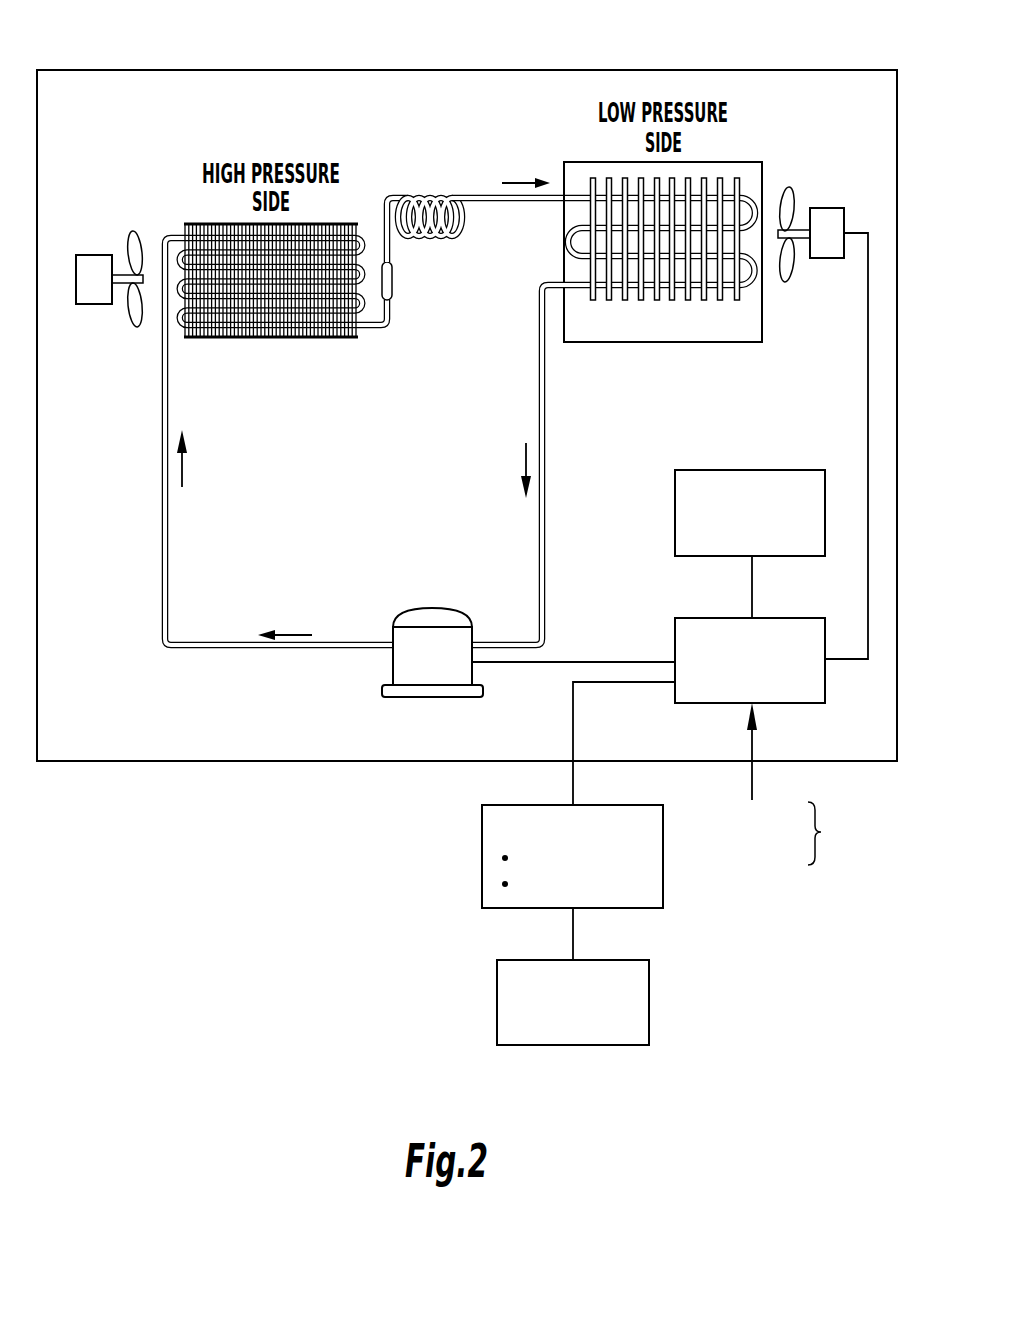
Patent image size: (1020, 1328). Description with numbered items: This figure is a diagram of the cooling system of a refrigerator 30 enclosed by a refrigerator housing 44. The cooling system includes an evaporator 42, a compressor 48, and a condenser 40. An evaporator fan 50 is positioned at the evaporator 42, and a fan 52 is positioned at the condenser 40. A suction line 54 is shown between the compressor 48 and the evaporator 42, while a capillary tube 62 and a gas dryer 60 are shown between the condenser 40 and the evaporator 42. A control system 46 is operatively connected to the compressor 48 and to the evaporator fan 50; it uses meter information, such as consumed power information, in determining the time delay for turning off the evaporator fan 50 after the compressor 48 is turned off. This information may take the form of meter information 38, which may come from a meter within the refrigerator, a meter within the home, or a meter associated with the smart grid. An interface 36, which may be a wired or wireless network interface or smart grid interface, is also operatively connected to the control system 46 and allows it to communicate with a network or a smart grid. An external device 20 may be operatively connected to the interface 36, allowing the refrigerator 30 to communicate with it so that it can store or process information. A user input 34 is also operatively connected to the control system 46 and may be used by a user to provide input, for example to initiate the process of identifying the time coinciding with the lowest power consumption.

The external device 20 is at (530, 960).
The refrigerator 30 is at (382, 52).
The user input 34 is at (708, 470).
The interface 36 is at (482, 832).
The meter information 38 is at (821, 832).
The condenser 40 is at (205, 224).
The evaporator 42 is at (748, 162).
The refrigerator housing 44 is at (208, 762).
The control system 46 is at (708, 618).
The compressor 48 is at (432, 608).
The evaporator fan 50 is at (828, 208).
The fan 52 is at (94, 255).
The suction line 54 is at (547, 462).
The gas dryer 60 is at (393, 268).
The capillary tube 62 is at (498, 193).